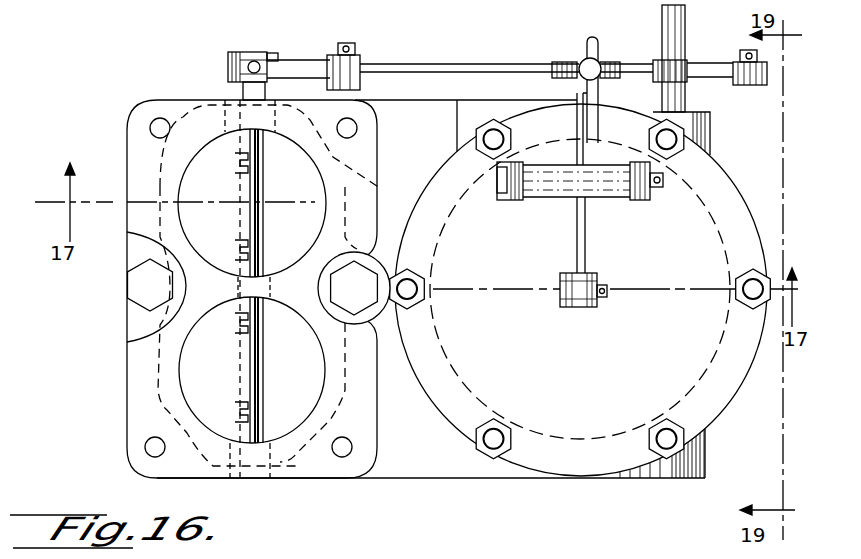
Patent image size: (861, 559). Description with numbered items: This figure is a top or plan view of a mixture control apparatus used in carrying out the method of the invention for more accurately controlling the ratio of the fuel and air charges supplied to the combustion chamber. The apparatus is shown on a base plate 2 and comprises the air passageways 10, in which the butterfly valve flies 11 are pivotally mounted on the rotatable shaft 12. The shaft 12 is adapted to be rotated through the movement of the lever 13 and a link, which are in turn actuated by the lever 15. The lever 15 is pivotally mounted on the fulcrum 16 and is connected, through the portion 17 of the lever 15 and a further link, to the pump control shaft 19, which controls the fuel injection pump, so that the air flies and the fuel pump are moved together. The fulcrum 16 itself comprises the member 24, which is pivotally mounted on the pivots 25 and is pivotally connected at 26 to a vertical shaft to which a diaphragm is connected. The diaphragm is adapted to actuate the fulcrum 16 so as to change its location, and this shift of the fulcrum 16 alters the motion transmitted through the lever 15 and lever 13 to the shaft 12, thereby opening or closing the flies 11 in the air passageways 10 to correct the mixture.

The base plate 2 is at (405, 460).
The air passageways 10 is at (212, 165).
The butterfly valve flies 11 is at (257, 194).
The rotatable shaft 12 is at (238, 84).
The lever 13 is at (300, 64).
The lever 15 is at (450, 67).
The fulcrum 16 is at (590, 60).
The portion of lever 17 is at (642, 66).
The pump control shaft 19 is at (673, 25).
The member 24 is at (585, 215).
The pivots 25 is at (505, 200).
The pivotal connection 26 is at (584, 308).